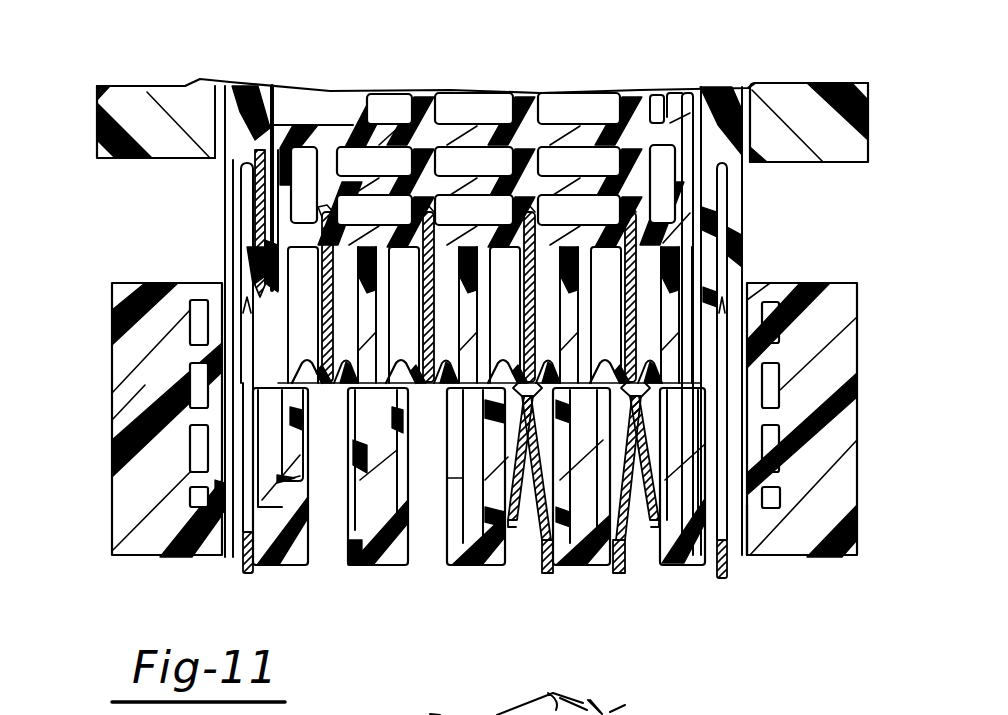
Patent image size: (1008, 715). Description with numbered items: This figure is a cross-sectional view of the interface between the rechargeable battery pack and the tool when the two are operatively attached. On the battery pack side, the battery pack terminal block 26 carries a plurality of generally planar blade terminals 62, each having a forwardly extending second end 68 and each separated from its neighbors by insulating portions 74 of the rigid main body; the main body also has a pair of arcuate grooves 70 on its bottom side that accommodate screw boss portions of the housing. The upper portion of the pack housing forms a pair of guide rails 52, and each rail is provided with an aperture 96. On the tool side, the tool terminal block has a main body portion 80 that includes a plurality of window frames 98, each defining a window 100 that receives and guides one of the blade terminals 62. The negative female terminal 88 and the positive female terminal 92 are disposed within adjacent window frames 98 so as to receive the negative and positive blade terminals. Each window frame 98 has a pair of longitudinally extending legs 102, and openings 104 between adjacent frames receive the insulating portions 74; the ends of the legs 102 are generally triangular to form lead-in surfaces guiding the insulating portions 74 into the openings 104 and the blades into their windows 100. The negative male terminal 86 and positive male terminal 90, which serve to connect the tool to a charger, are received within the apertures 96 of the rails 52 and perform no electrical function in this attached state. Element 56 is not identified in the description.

The battery pack terminal block 26 is at (532, 90).
The mounting block 56 is at (115, 100).
The guide rails 52 is at (235, 165).
The terminals 62 is at (318, 210).
The insulating portions 74 is at (622, 120).
The apertures 96 is at (248, 282).
The openings 104 is at (357, 480).
The negative male terminal 86 is at (230, 430).
The window frames 98 is at (190, 495).
The positive male terminal 90 is at (723, 440).
The main body portion 80 is at (880, 508).
The legs 102 is at (455, 462).
The window 100 is at (280, 479).
The negative female terminal 88 is at (522, 515).
The positive female terminal 92 is at (633, 540).
The second end 68 is at (593, 707).
The arcuate grooves 70 is at (415, 706).